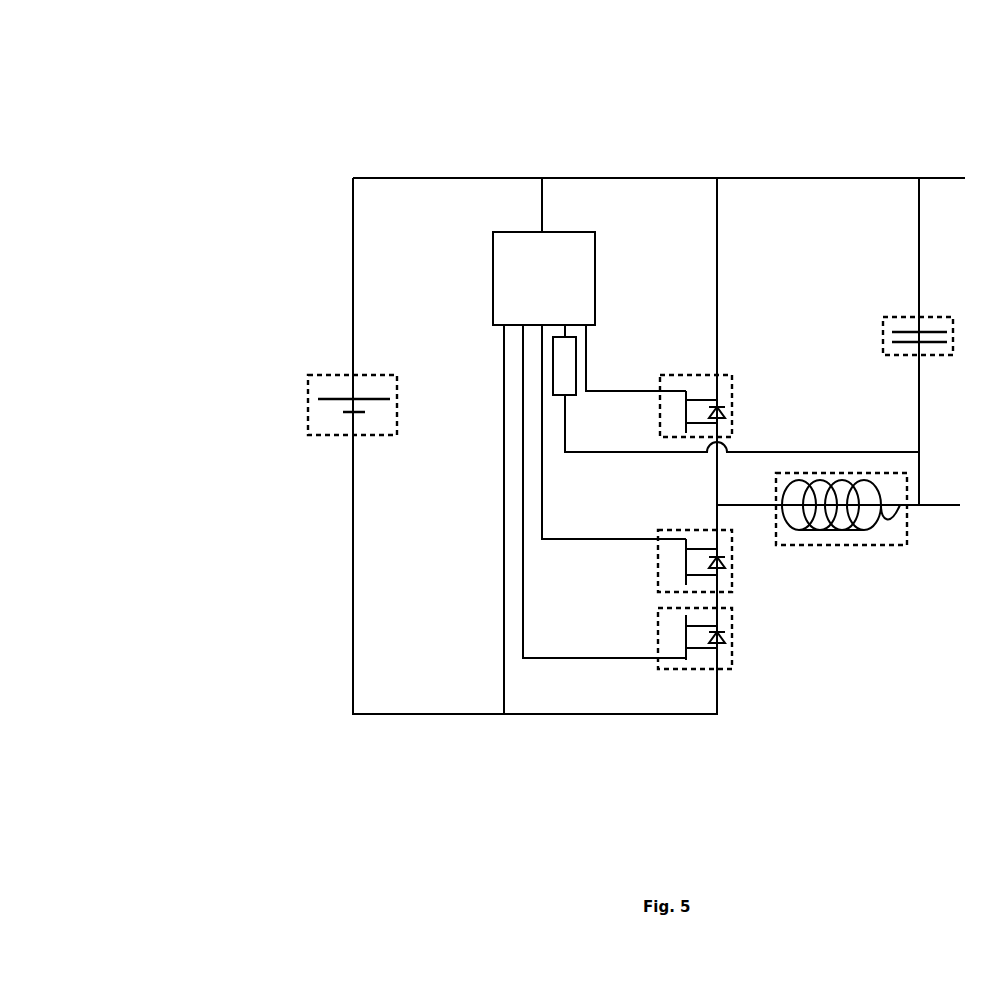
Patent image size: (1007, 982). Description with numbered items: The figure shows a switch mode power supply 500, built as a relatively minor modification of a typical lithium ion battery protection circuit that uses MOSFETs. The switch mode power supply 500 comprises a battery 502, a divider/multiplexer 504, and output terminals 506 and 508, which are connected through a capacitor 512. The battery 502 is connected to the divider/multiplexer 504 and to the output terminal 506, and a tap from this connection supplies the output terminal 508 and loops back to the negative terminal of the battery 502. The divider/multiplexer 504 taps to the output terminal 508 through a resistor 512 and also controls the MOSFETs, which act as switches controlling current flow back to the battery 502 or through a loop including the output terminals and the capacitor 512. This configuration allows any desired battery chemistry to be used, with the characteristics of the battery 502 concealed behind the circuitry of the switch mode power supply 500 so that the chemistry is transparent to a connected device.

The switch mode power supply 500 is at (140, 106).
The battery 502 is at (335, 375).
The divider/multiplexer 504 is at (525, 232).
The output terminal 506 is at (945, 178).
The output terminal 508 is at (940, 505).
The capacitor 512 is at (898, 317).